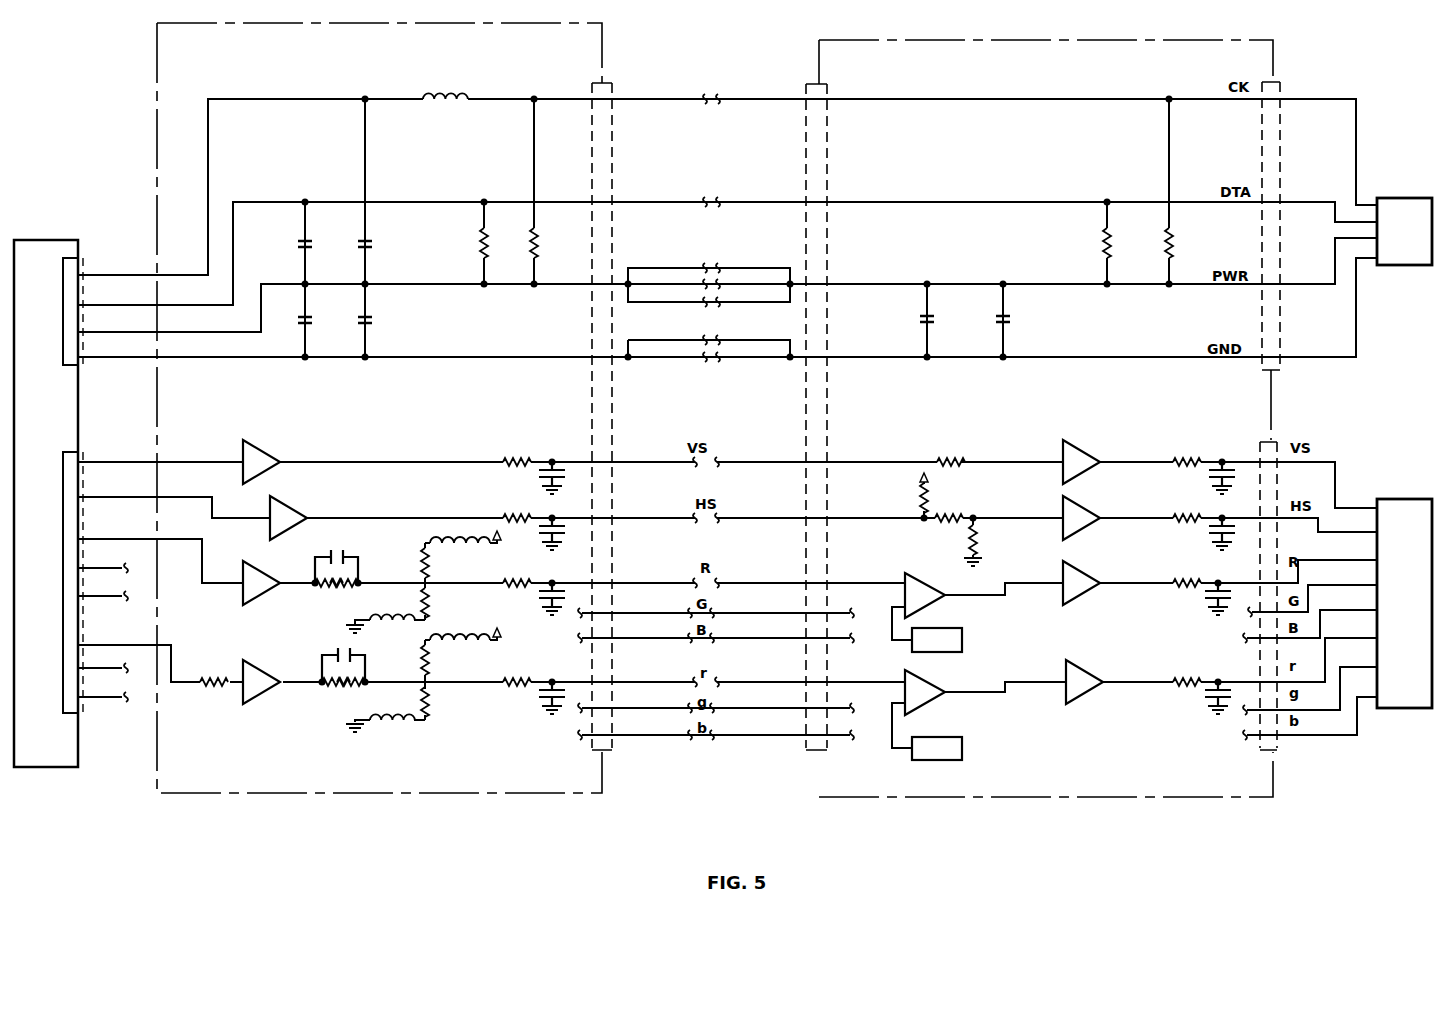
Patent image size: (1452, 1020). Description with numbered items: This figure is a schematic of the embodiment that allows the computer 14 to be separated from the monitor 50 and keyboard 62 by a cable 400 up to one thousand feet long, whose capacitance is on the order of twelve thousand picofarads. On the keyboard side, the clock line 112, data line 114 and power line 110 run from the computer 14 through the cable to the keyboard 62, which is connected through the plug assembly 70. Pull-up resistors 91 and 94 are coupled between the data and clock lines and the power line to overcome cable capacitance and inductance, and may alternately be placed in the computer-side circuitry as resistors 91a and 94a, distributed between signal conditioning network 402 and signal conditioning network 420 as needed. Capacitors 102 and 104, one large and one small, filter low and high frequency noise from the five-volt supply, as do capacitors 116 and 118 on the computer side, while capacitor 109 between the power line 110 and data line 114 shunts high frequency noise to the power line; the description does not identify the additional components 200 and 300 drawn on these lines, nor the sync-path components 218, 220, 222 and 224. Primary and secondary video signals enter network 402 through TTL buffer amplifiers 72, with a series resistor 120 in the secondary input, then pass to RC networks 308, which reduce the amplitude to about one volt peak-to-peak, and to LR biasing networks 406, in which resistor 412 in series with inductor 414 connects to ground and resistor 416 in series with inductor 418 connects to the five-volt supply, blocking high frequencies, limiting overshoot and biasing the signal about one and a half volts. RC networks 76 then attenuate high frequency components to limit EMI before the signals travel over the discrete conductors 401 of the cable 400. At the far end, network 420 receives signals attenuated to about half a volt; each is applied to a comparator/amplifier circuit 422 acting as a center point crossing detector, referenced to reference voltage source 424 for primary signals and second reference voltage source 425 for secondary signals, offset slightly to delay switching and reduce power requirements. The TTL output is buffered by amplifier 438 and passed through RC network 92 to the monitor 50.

The computer 14 is at (70, 240).
The keyboard 62 is at (1410, 198).
The monitor 50 is at (1406, 499).
The plug assembly 70 is at (1238, 120).
The TTL buffer amplifier 72 is at (273, 456).
The RC network 76 is at (534, 587).
The pull-up resistor 91 is at (1176, 245).
The pull-up resistor 91a is at (467, 243).
The pull-up resistor 94 is at (1104, 243).
The pull-up resistor 94a is at (538, 245).
The RC network 92 is at (1204, 588).
The capacitor 102 is at (916, 320).
The capacitor 104 is at (1008, 320).
The capacitor 109 is at (296, 237).
The power line 110 is at (415, 284).
The clock line 112 is at (497, 99).
The data line 114 is at (432, 202).
The capacitor 116 is at (300, 325).
The capacitor 118 is at (368, 325).
The series resistor 120 is at (209, 692).
The capacitor 200 is at (371, 242).
The resistor 218 is at (954, 464).
The pull-up resistor 220 is at (934, 500).
The pull-down resistor 222 is at (982, 541).
The series resistor 224 is at (940, 524).
The inductor 300 is at (454, 104).
The RC network 308 is at (336, 633).
The cable 400 is at (755, 68).
The discrete conductor 401 is at (675, 99).
The signal conditioning network 402 is at (402, 427).
The LR biasing network 406 is at (423, 627).
The resistor 412 is at (422, 601).
The inductor 414 is at (396, 628).
The resistor 416 is at (433, 563).
The inductor 418 is at (445, 543).
The signal conditioning network 420 is at (1023, 413).
The comparator/amplifier circuit 422 is at (917, 573).
The reference voltage source 424 is at (968, 645).
The second reference voltage source 425 is at (968, 750).
The TTL buffer amplifier 438 is at (1086, 480).